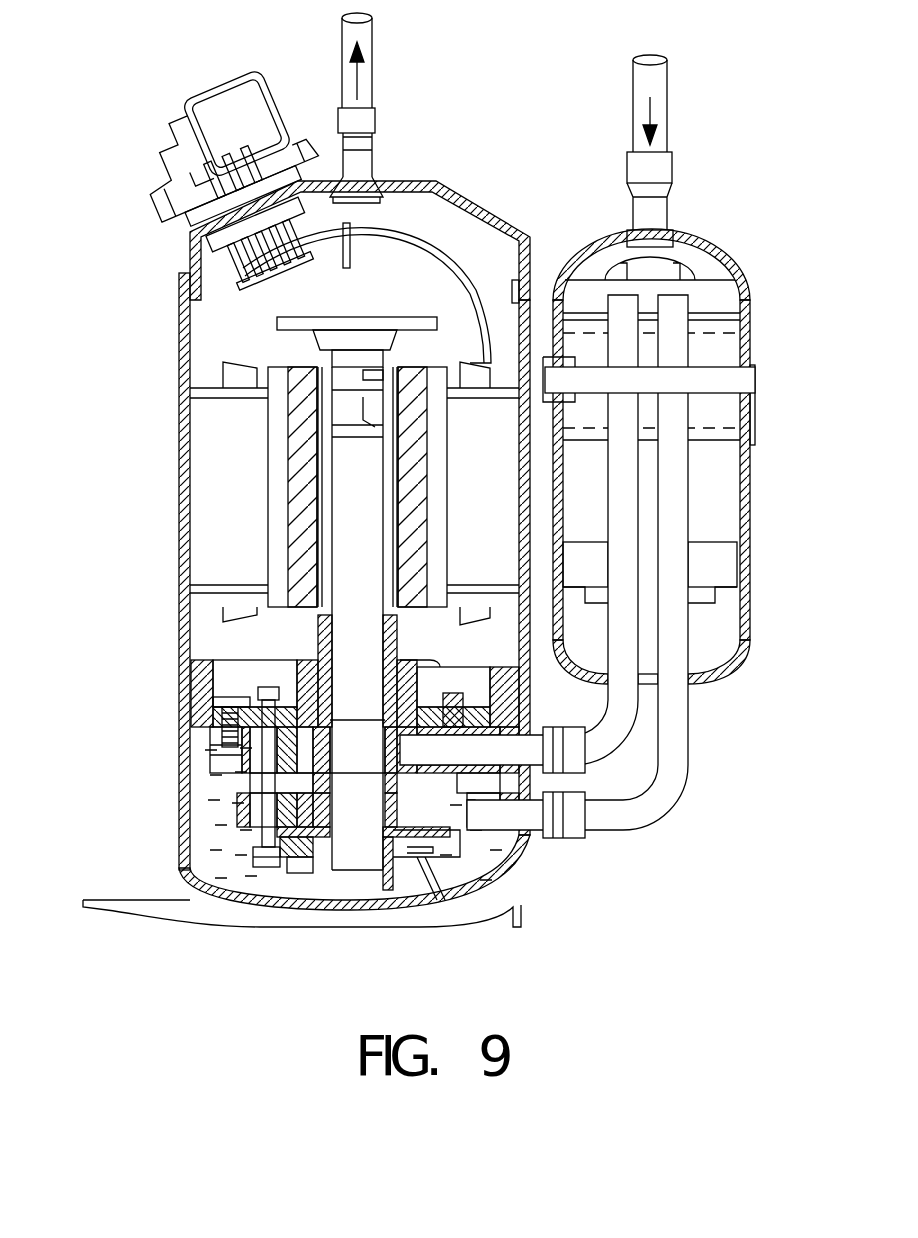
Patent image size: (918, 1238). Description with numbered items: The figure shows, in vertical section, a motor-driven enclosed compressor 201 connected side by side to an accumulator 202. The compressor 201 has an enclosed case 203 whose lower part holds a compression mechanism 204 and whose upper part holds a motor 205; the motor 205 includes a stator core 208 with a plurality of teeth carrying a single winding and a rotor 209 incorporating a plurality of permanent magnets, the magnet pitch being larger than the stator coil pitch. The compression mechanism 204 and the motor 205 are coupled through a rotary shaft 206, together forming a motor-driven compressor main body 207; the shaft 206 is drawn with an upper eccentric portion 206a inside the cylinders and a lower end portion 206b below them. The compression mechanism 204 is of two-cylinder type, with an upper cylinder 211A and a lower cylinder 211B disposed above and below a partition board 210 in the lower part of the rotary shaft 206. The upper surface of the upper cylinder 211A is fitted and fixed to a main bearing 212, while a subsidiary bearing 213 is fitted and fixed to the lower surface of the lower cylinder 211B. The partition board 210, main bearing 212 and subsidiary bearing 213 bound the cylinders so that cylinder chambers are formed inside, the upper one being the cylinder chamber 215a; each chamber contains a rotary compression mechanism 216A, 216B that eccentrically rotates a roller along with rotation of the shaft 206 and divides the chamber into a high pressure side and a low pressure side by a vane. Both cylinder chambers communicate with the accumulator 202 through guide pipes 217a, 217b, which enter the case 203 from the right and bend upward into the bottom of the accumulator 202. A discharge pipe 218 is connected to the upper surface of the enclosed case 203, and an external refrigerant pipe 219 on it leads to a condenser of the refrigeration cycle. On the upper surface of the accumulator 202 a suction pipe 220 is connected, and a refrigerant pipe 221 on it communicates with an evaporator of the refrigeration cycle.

The compressor 201 is at (178, 393).
The accumulator 202 is at (750, 311).
The enclosed case 203 is at (180, 296).
The compression mechanism 204 is at (203, 790).
The motor 205 is at (479, 292).
The rotary shaft 206 is at (347, 548).
The upper eccentric portion 206a is at (363, 748).
The lower shaft end portion 206b is at (357, 813).
The motor-driven compressor main body 207 is at (422, 247).
The stator 208 is at (208, 447).
The rotor 209 is at (278, 470).
The partition board 210 is at (262, 797).
The upper cylinder 211A is at (215, 748).
The lower cylinder 211B is at (250, 860).
The main bearing 212 is at (255, 682).
The subsidiary bearing 213 is at (278, 867).
The cylinder chamber 215a is at (225, 705).
The rotary compression mechanism 216A is at (442, 727).
The rotary compression mechanism 216B is at (432, 903).
The guide pipe 217a is at (592, 750).
The guide pipe 217b is at (675, 783).
The discharge pipe 218 is at (377, 115).
The refrigerant pipe 219 is at (372, 40).
The suction pipe 220 is at (675, 168).
The refrigerant pipe 221 is at (670, 110).